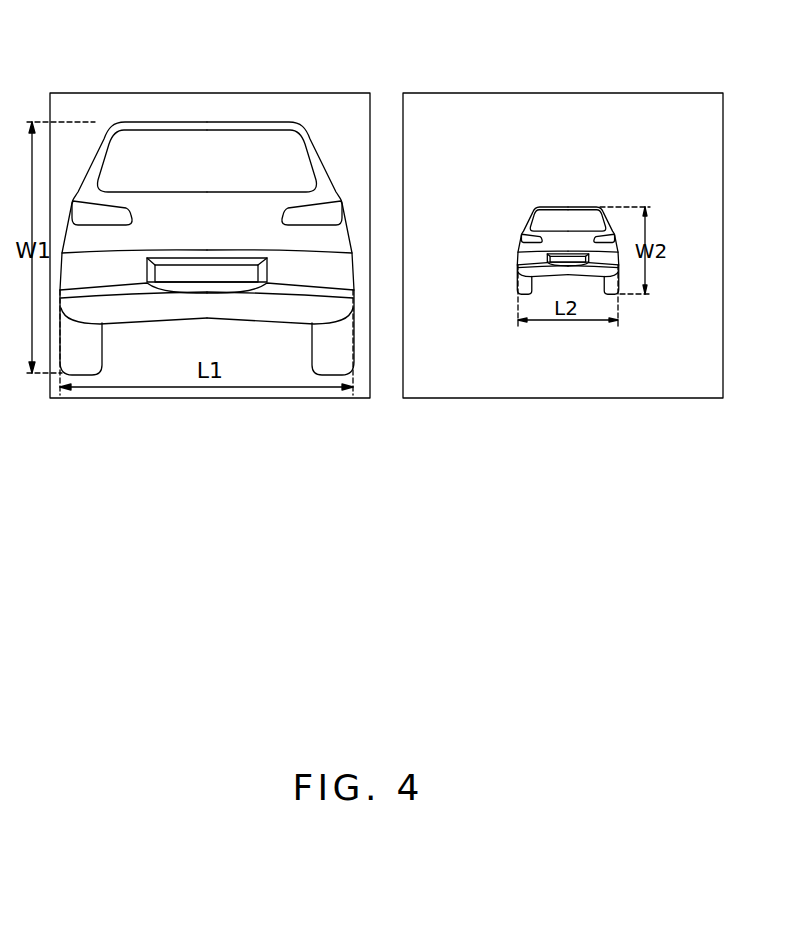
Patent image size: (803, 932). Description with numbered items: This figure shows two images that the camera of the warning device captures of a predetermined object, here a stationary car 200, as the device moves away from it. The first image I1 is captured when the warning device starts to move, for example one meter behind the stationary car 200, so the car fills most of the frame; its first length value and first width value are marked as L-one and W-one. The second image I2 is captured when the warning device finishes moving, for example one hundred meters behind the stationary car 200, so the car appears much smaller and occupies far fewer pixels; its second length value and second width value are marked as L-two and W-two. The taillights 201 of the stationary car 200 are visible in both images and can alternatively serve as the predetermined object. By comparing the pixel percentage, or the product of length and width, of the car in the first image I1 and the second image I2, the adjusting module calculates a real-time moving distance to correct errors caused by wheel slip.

The stationary car 200 is at (292, 150).
The taillights 201 is at (327, 210).
The first image I1 is at (118, 93).
The second image I2 is at (493, 93).